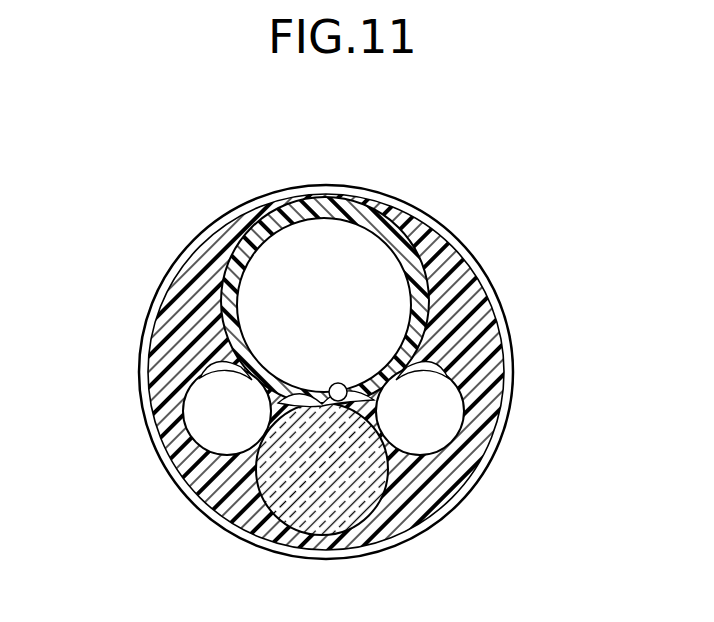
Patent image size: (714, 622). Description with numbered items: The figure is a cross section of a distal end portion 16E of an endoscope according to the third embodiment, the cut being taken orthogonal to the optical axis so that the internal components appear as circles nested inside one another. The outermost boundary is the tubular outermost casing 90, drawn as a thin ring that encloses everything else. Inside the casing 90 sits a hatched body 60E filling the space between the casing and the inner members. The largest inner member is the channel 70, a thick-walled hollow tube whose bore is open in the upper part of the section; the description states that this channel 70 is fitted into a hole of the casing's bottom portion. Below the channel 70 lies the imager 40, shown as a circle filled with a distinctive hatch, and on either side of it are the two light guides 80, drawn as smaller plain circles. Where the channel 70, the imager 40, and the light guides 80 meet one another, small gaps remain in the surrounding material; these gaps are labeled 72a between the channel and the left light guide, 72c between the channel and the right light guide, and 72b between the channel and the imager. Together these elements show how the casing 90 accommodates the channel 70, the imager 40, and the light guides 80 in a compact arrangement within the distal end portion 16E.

The distal end portion 16E is at (349, 168).
The catheter body 60E is at (182, 313).
The channel 70 is at (412, 273).
The gap 72a is at (225, 354).
The gap 72b is at (373, 398).
The gap 72c is at (427, 343).
The light guides 80 is at (202, 421).
The imager 40 is at (325, 520).
The outermost casing 90 is at (168, 480).